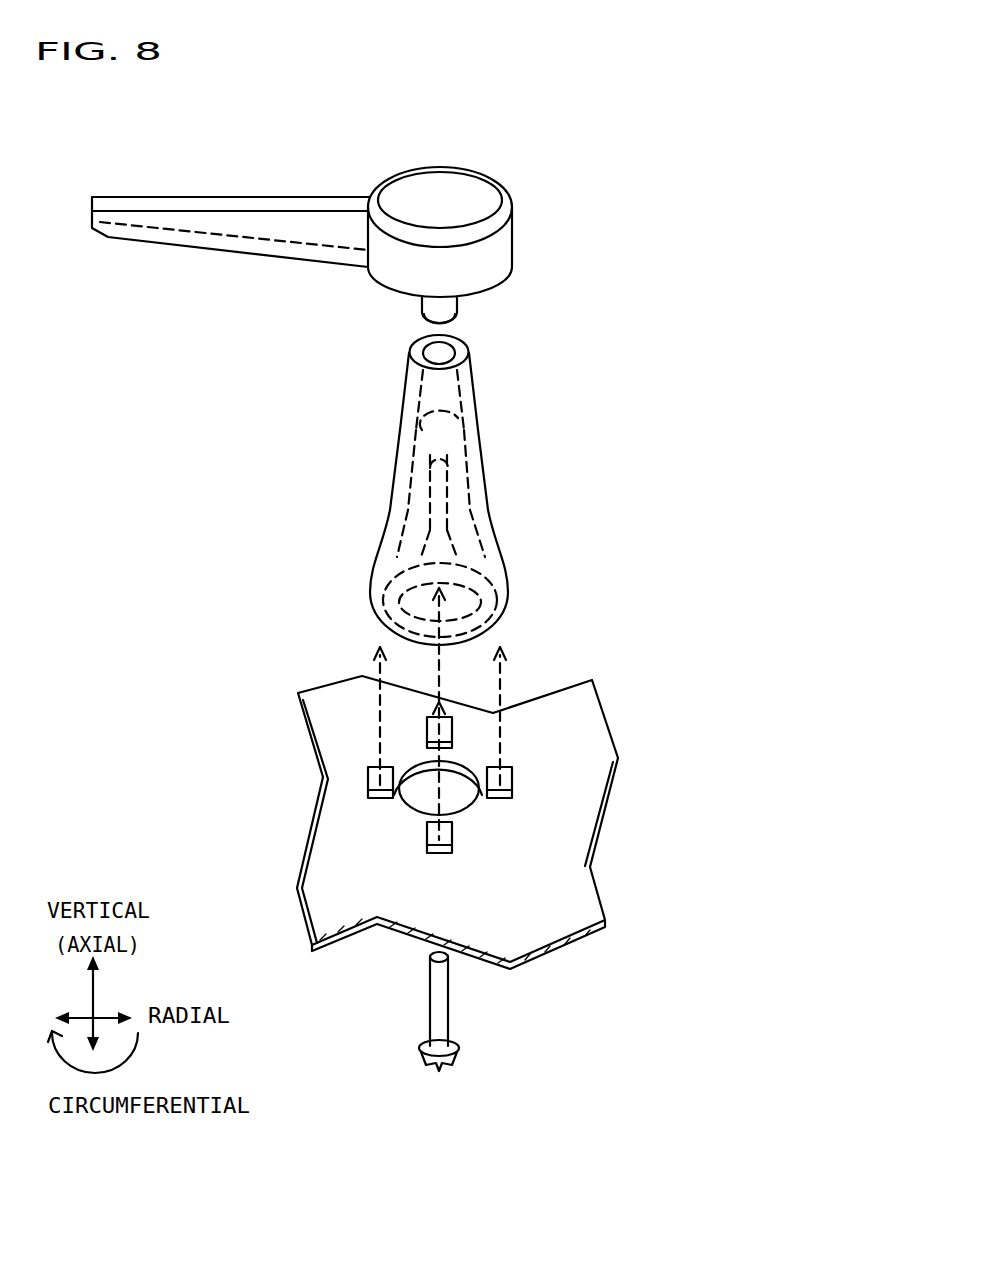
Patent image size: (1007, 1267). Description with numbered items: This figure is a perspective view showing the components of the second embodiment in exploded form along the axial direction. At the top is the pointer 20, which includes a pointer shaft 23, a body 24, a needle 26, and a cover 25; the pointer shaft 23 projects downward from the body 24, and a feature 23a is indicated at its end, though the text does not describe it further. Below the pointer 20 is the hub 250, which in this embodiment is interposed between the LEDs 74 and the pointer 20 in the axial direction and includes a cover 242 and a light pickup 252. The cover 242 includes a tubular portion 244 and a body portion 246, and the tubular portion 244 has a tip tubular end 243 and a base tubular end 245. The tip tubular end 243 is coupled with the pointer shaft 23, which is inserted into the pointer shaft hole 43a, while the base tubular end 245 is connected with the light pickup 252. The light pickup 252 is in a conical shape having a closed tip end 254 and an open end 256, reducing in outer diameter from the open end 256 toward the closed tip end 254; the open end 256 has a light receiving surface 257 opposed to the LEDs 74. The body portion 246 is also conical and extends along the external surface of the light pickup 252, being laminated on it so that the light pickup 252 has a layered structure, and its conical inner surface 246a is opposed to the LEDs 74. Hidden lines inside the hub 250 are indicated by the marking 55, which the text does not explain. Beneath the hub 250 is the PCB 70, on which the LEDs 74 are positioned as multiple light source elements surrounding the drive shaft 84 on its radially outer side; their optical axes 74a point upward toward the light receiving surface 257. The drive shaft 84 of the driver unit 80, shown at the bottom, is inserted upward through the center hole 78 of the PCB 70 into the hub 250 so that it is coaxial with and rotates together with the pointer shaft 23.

The pointer 20 is at (683, 228).
The body 24 is at (522, 228).
The cover 25 is at (500, 187).
The needle 26 is at (243, 194).
The pointer shaft 23 is at (460, 302).
The tip of engagement protrusion 23a is at (462, 323).
The hub 250 is at (683, 448).
The cover 242 is at (603, 408).
The tip tubular end 243 is at (409, 345).
The pointer shaft hole 43a is at (440, 352).
The tubular portion 244 is at (408, 395).
The base tubular end 245 is at (410, 425).
The body portion 246 is at (398, 460).
The inner surface 246a is at (490, 565).
The light pickup 252 is at (598, 523).
The closed tip end 254 is at (385, 488).
The open end 256 is at (393, 580).
The light receiving surface 257 is at (372, 605).
The center axis 55 is at (478, 505).
The PCB 70 is at (710, 810).
The center hole 78 is at (483, 760).
The LEDs 74 is at (453, 728).
The optical axes 74a is at (372, 664).
The driver unit 80 is at (710, 1025).
The drive shaft 84 is at (450, 1002).